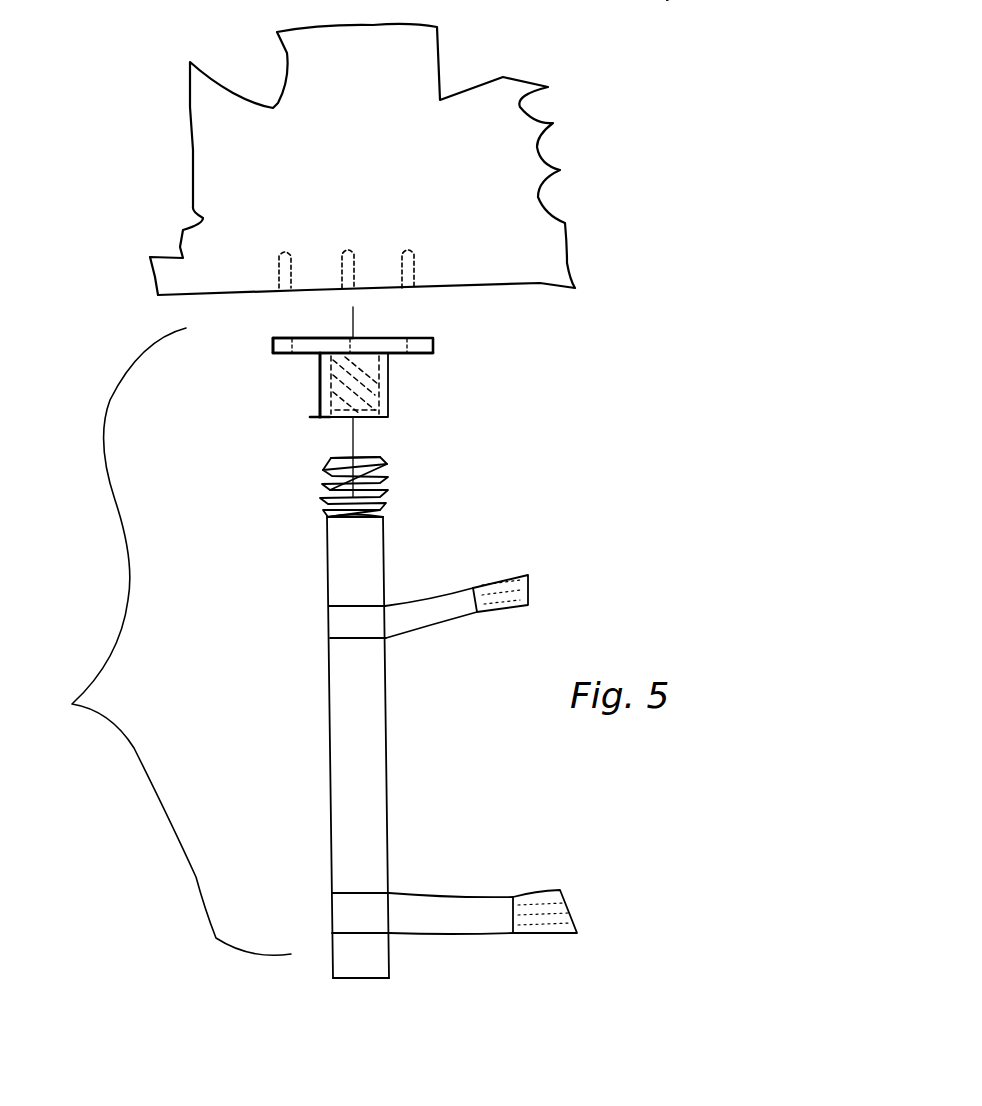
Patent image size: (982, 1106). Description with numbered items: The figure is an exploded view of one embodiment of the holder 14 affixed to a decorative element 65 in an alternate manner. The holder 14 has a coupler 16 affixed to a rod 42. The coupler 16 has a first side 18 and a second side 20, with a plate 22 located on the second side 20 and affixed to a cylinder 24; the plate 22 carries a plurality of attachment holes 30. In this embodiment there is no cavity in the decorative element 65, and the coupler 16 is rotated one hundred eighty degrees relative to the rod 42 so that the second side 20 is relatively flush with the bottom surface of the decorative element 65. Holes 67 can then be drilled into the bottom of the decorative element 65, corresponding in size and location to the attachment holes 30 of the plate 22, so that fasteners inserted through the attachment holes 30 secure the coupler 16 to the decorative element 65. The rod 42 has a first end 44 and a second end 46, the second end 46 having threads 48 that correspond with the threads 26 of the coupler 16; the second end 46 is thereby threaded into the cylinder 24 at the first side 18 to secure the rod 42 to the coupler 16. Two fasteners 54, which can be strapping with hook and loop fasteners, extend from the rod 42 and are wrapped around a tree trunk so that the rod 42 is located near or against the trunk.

The holder 14 is at (155, 641).
The coupler 16 is at (436, 344).
The first side 18 is at (383, 420).
The second side 20 is at (267, 337).
The plate 22 is at (440, 354).
The cylinder 24 is at (317, 418).
The threads 26 is at (376, 380).
The attachment holes 30 is at (290, 357).
The rod 42 is at (391, 807).
The first end 44 is at (380, 980).
The second end 46 is at (343, 460).
The threads 48 is at (390, 483).
The fasteners 54 is at (530, 580).
The decorative element 65 is at (543, 70).
The holes 67 is at (410, 290).